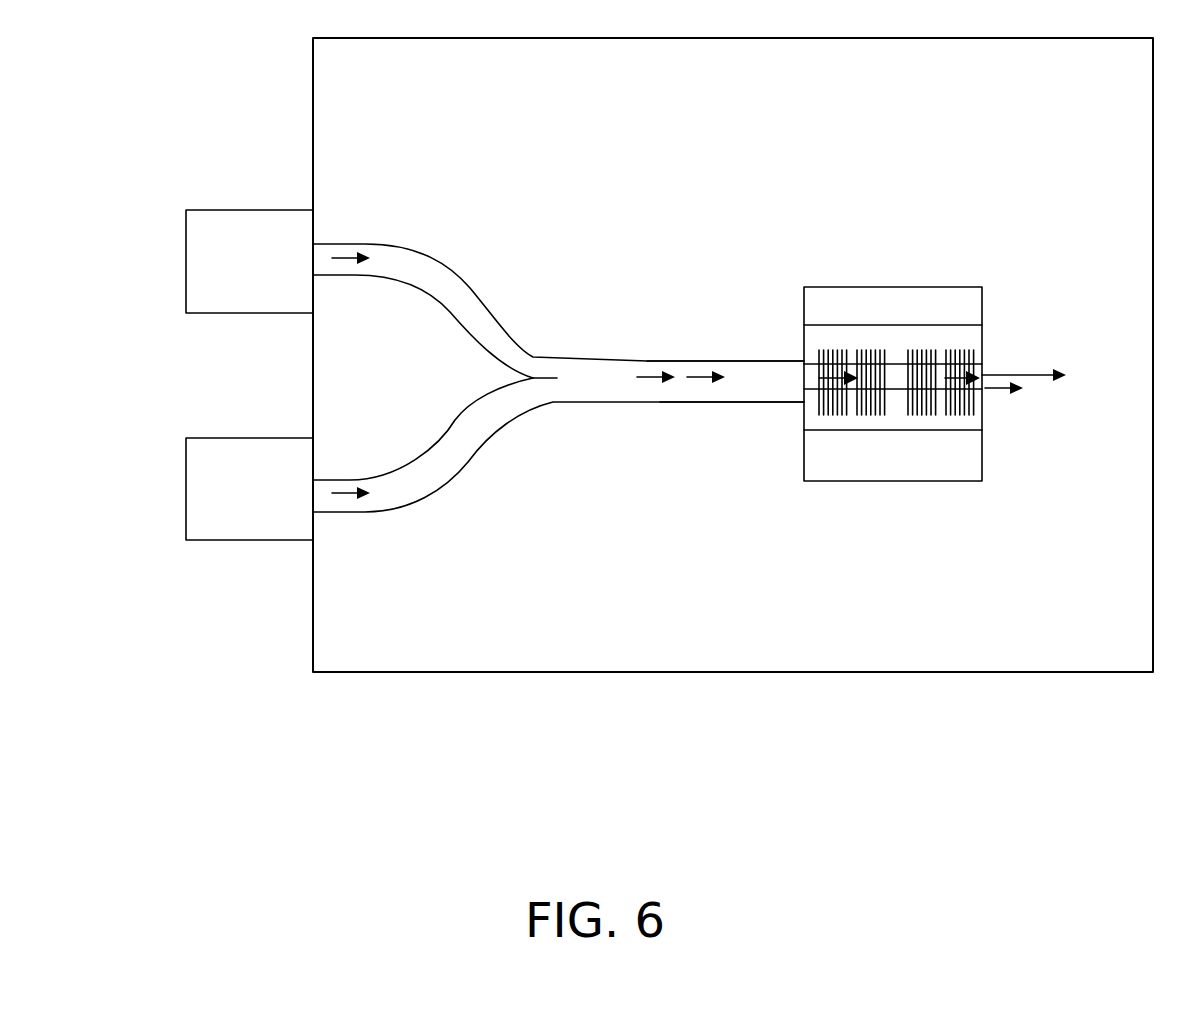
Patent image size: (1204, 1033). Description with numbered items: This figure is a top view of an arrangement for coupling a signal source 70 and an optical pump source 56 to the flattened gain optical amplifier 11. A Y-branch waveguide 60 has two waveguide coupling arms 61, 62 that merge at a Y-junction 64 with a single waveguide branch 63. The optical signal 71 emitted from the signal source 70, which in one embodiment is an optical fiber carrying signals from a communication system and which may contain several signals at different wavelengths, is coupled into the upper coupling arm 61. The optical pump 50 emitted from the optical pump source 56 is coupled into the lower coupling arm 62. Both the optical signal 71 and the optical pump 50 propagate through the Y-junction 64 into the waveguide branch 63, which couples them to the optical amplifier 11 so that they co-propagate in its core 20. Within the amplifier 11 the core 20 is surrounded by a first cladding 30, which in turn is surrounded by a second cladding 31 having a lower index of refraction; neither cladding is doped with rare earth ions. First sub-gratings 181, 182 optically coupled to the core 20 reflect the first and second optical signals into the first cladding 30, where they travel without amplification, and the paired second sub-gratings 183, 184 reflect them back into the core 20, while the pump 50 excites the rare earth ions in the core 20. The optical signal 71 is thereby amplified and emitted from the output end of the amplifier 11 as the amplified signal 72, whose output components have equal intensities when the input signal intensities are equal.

The flattened gain optical amplifier 11 is at (896, 374).
The core 20 is at (900, 370).
The first cladding 30 is at (938, 420).
The second cladding 31 is at (843, 442).
The optical pump 50 is at (343, 495).
The optical pump source 56 is at (253, 452).
The Y-branch waveguide 60 is at (558, 387).
The waveguide coupling arm 61 is at (422, 272).
The waveguide coupling arm 62 is at (447, 478).
The waveguide branch 63 is at (712, 353).
The Y-junction 64 is at (550, 377).
The signal source 70 is at (262, 226).
The optical signal 71 is at (345, 255).
The amplified signal 72 is at (1040, 375).
The first sub-grating 181 is at (826, 340).
The first sub-grating 182 is at (868, 350).
The second sub-grating 183 is at (965, 340).
The second sub-grating 184 is at (918, 410).